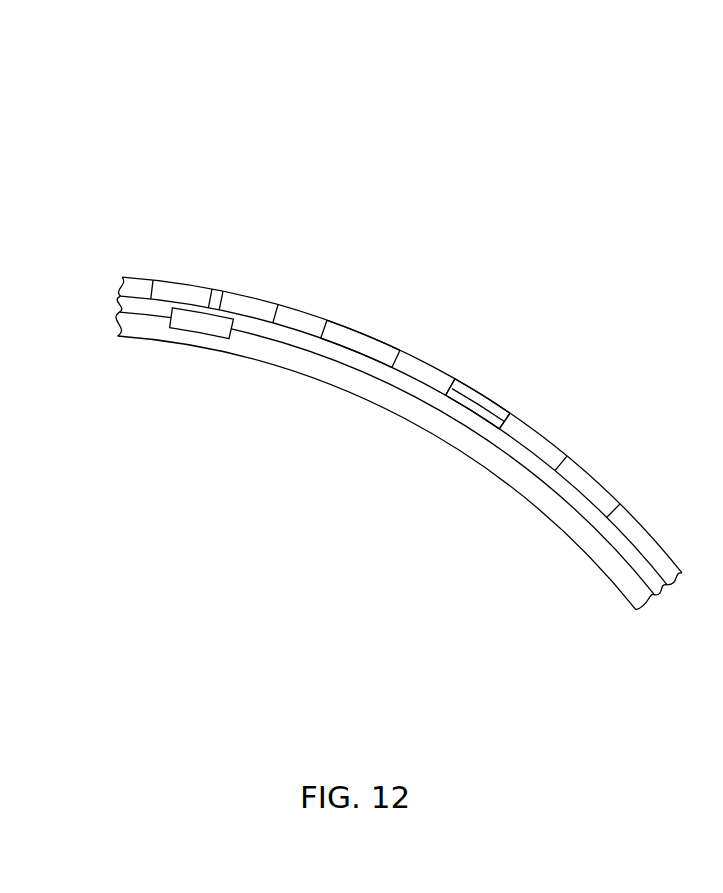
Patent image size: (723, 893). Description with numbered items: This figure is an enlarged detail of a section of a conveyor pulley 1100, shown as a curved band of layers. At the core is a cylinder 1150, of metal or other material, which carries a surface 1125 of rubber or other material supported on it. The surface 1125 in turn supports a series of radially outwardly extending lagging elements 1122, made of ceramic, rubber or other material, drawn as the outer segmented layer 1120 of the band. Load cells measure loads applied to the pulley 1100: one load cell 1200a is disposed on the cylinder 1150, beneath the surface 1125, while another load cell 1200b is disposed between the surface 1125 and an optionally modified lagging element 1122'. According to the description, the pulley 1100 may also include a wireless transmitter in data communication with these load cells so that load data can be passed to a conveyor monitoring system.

The pulley 1100 is at (630, 153).
The outer layer 1120 is at (332, 263).
The lagging element 1122 is at (412, 308).
The modified lagging element 1122' is at (541, 328).
The load cell 1200a is at (203, 318).
The load cell 1200b is at (483, 403).
The surface 1125 is at (517, 453).
The cylinder 1150 is at (190, 345).